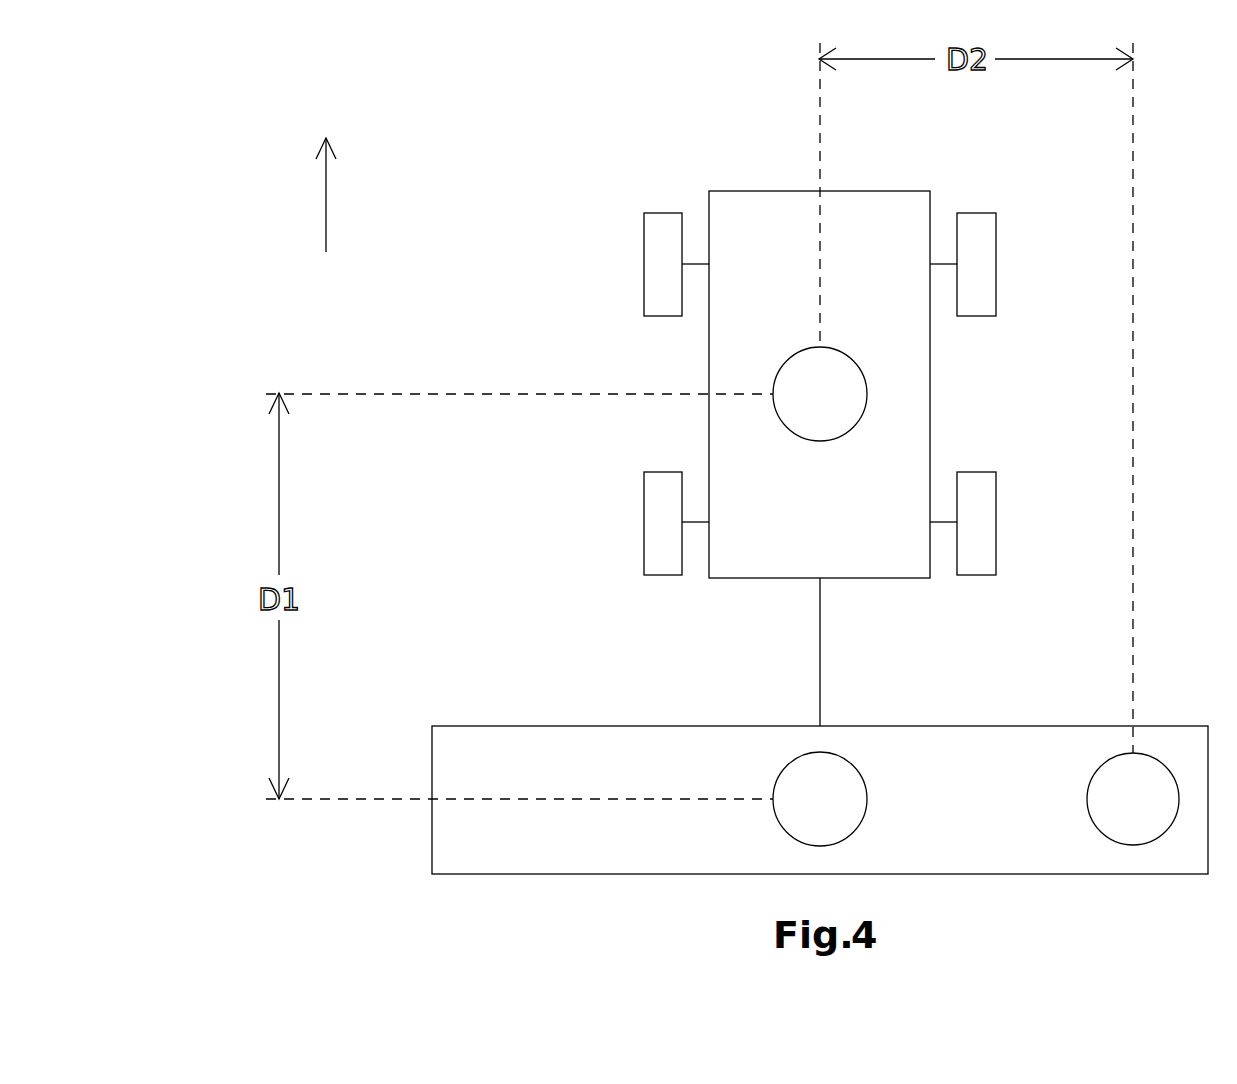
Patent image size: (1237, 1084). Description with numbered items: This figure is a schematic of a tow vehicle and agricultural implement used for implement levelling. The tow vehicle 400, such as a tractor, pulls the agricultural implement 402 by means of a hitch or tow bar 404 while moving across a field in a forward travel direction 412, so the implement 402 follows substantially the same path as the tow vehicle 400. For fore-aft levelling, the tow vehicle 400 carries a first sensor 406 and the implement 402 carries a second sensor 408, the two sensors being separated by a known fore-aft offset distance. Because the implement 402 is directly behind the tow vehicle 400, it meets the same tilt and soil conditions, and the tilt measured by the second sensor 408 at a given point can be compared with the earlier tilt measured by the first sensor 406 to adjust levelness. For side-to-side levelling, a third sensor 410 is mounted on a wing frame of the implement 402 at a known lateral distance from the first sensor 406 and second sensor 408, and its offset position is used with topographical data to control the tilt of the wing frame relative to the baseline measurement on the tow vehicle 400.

The tow vehicle 400 is at (743, 191).
The agricultural implement 402 is at (533, 726).
The hitch or tow bar 404 is at (820, 652).
The first sensor 406 is at (820, 394).
The second sensor 408 is at (820, 799).
The third sensor 410 is at (1133, 799).
The forward travel direction 412 is at (326, 197).